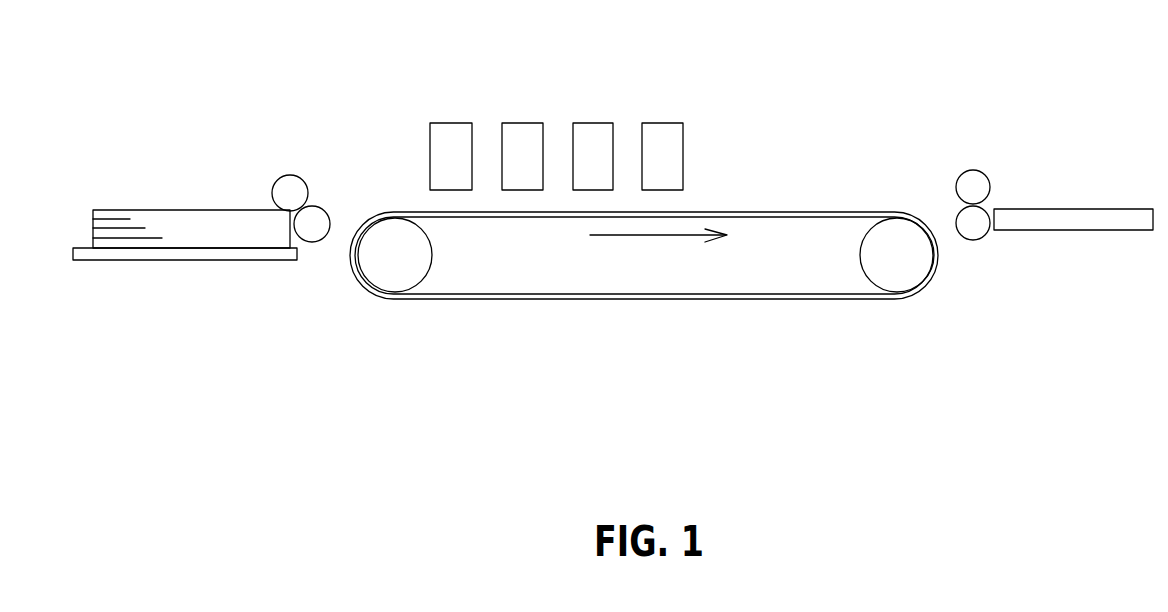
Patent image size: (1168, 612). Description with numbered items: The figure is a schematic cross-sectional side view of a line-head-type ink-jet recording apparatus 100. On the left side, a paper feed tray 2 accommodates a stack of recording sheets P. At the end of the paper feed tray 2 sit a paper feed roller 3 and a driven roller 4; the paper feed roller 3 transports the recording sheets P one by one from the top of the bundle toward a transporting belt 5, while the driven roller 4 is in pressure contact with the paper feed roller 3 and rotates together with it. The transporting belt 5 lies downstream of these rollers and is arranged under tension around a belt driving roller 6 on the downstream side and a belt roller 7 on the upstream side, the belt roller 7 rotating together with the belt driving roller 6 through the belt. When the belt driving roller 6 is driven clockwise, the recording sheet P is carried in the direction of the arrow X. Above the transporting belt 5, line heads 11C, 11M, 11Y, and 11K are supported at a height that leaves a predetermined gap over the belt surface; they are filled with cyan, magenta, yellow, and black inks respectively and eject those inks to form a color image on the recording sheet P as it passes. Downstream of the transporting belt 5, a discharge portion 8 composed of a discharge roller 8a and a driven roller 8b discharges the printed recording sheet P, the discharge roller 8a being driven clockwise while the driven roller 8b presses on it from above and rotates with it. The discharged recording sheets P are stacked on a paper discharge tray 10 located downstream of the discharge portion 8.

The ink-jet recording apparatus 100 is at (358, 131).
The recording sheet P is at (185, 222).
The paper feed tray 2 is at (165, 258).
The paper feed roller 3 is at (289, 190).
The driven roller 4 is at (312, 236).
The transporting belt 5 is at (630, 299).
The belt driving roller 6 is at (898, 275).
The belt roller 7 is at (402, 275).
The arrow X is at (658, 251).
The line head 11C is at (457, 133).
The line head 11M is at (526, 133).
The line head 11Y is at (595, 133).
The line head 11K is at (663, 133).
The discharge portion 8 is at (938, 212).
The discharge roller 8a is at (973, 232).
The driven roller 8b is at (973, 186).
The paper discharge tray 10 is at (1085, 222).